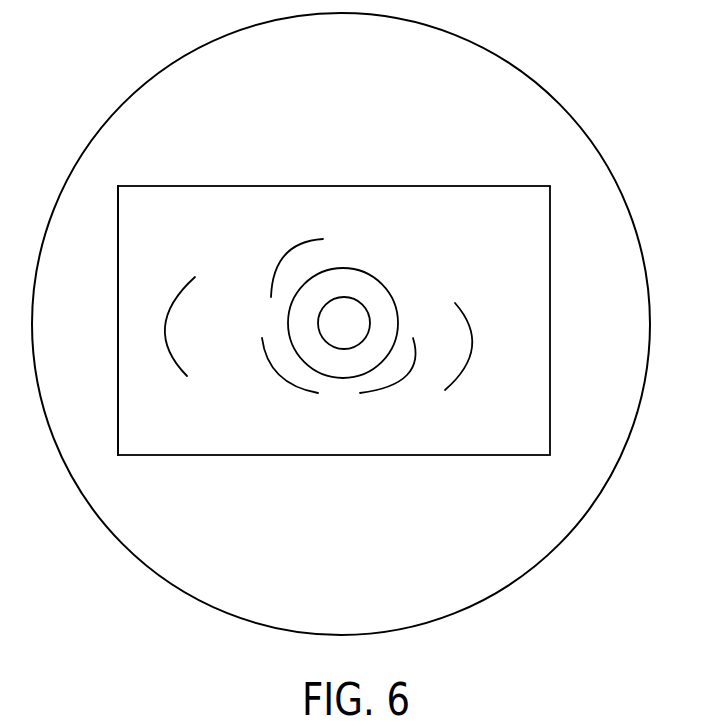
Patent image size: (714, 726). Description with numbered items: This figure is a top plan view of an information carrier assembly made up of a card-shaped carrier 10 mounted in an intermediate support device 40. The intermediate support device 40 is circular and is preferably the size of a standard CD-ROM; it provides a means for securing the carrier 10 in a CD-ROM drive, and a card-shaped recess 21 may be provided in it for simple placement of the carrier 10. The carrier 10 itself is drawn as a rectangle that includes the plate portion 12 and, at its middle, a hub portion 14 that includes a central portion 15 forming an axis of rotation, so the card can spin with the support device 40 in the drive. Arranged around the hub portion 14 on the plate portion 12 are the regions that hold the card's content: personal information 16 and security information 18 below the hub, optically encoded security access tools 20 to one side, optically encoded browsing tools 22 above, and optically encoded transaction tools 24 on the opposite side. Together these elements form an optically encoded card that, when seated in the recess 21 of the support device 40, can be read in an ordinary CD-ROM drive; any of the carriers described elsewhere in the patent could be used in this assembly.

The carrier 10 is at (365, 300).
The plate portion 12 is at (495, 210).
The hub portion 14 is at (315, 337).
The central portion 15 is at (356, 337).
The personal information 16 is at (378, 390).
The security information 18 is at (267, 367).
The optically encoded security access tools 20 is at (472, 350).
The card-shaped recess 21 is at (118, 340).
The optically encoded browsing tools 22 is at (287, 253).
The optically encoded transaction tools 24 is at (180, 291).
The intermediate support device 40 is at (495, 83).